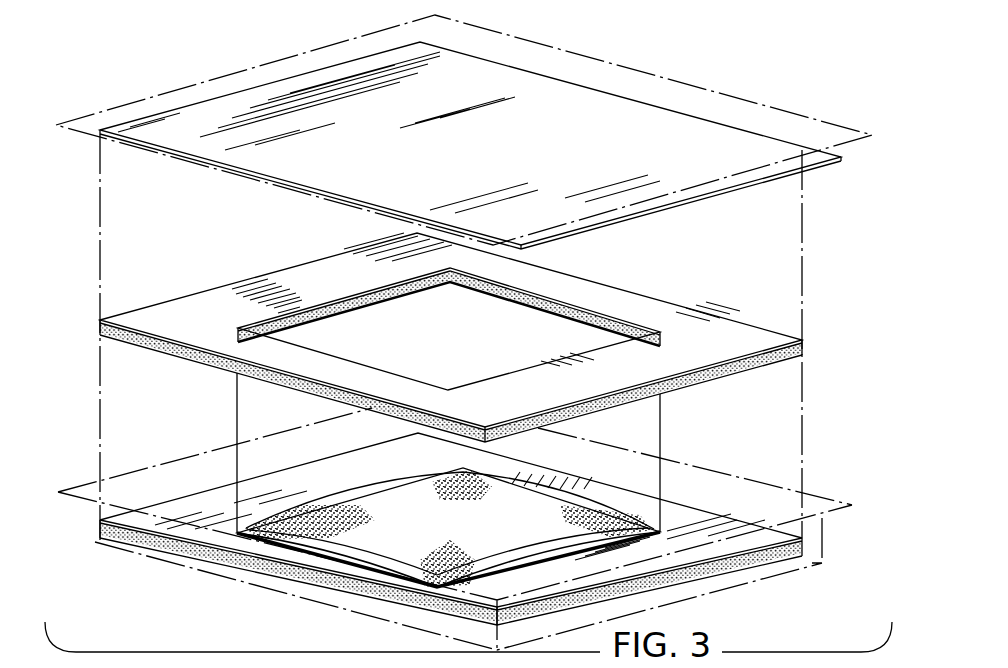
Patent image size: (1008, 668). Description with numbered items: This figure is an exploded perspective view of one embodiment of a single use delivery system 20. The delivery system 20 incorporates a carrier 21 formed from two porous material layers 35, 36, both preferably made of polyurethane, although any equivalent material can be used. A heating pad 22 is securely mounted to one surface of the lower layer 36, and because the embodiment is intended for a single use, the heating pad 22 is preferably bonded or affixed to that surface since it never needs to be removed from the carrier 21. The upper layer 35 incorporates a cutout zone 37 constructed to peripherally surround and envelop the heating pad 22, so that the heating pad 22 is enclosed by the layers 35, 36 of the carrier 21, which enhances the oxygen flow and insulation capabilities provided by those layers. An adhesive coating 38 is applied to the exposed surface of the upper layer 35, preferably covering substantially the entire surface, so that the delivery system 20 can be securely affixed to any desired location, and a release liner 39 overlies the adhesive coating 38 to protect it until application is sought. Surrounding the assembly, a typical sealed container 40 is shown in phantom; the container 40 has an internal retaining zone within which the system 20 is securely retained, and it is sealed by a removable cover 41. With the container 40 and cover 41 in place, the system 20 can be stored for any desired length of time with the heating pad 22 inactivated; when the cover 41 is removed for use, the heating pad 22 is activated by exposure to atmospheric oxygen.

The delivery system 20 is at (828, 274).
The carrier 21 is at (116, 394).
The heating pad 22 is at (418, 492).
The porous material layer 35 is at (98, 327).
The porous material layer 36 is at (202, 548).
The cutout zone 37 is at (597, 320).
The adhesive coating 38 is at (258, 282).
The release liner 39 is at (755, 143).
The sealed container 40 is at (713, 592).
The removable cover 41 is at (598, 62).